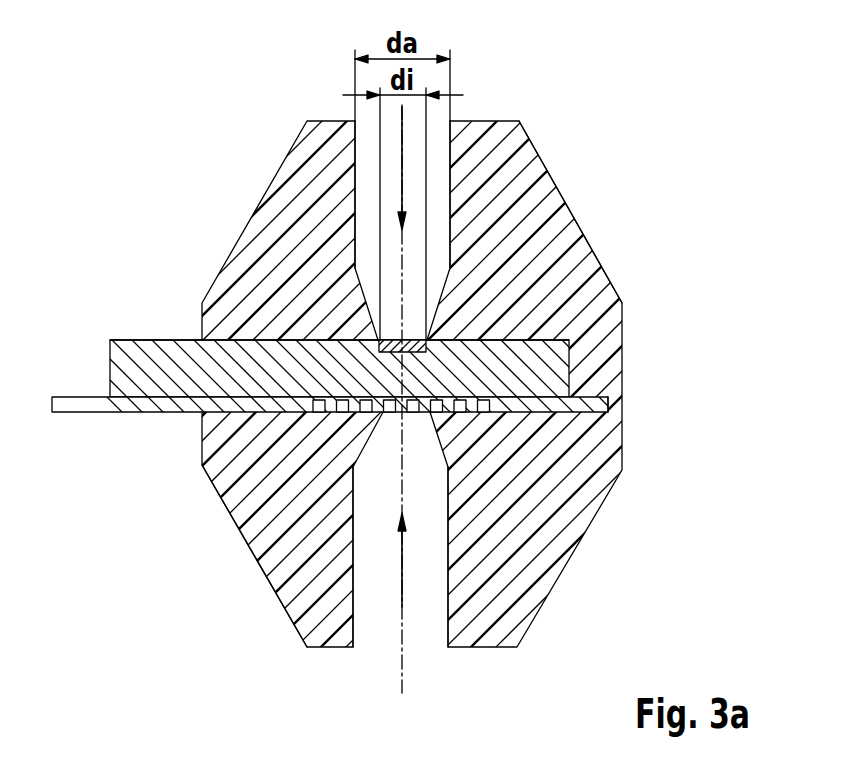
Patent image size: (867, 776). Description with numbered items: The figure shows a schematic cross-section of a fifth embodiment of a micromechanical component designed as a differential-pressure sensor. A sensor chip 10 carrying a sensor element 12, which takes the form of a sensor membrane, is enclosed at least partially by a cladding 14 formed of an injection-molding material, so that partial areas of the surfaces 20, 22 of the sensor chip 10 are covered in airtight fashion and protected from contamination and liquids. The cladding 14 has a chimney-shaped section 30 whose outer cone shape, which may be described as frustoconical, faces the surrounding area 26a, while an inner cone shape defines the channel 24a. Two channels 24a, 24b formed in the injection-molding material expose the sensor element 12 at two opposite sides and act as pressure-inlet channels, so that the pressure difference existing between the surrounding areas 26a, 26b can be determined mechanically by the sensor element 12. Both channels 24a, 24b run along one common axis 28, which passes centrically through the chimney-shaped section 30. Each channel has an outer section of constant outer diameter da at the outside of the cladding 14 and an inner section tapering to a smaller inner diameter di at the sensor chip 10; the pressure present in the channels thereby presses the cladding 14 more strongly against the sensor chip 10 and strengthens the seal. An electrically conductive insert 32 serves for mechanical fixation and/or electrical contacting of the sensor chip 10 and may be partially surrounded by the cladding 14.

The sensor chip 10 is at (145, 355).
The sensor element 12 is at (400, 357).
The cladding 14 is at (553, 536).
The surface of sensor chip 20 is at (185, 334).
The surface of sensor chip 22 is at (145, 410).
The channel 24a is at (402, 175).
The channel 24b is at (402, 574).
The surrounding area 26a is at (543, 112).
The surrounding area 26b is at (486, 697).
The axis 28 is at (402, 684).
The chimney-shaped section 30 is at (578, 207).
The electrically conductive insert 32 is at (600, 405).